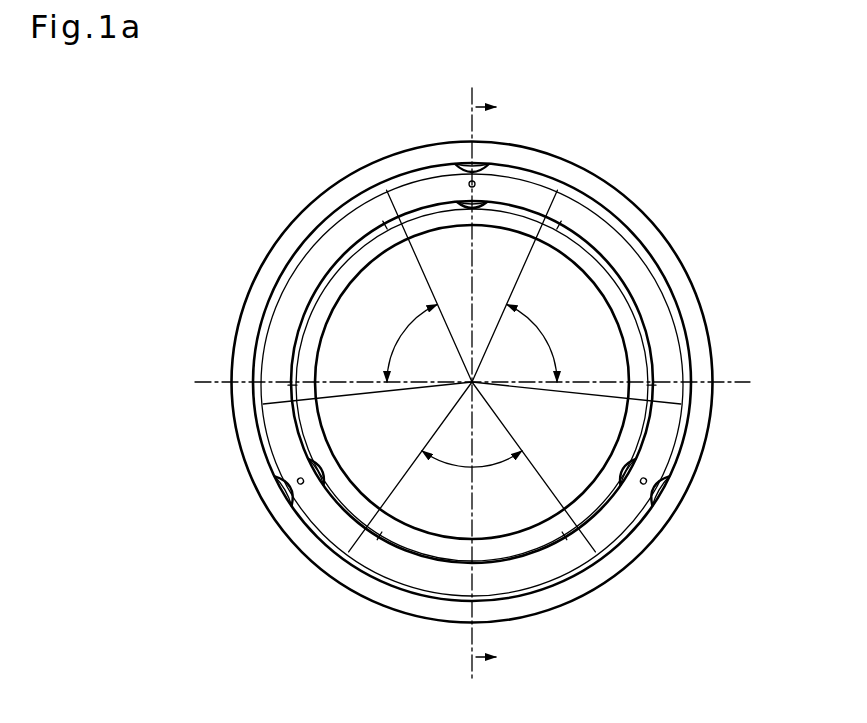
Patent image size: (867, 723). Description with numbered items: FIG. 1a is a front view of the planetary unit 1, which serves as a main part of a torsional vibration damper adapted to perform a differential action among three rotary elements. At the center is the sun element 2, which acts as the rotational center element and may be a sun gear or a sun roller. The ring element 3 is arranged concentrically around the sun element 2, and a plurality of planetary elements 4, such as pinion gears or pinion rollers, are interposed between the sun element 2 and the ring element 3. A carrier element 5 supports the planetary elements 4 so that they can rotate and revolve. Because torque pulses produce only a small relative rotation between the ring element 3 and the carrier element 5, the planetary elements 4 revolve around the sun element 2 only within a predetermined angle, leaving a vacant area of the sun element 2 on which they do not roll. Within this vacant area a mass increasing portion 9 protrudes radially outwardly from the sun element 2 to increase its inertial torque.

The planetary unit 1 is at (586, 111).
The sun element 2 is at (550, 236).
The ring element 3 is at (381, 167).
The planetary elements 4 is at (467, 200).
The carrier element 5 is at (518, 182).
The mass increasing portion 9 is at (338, 263).